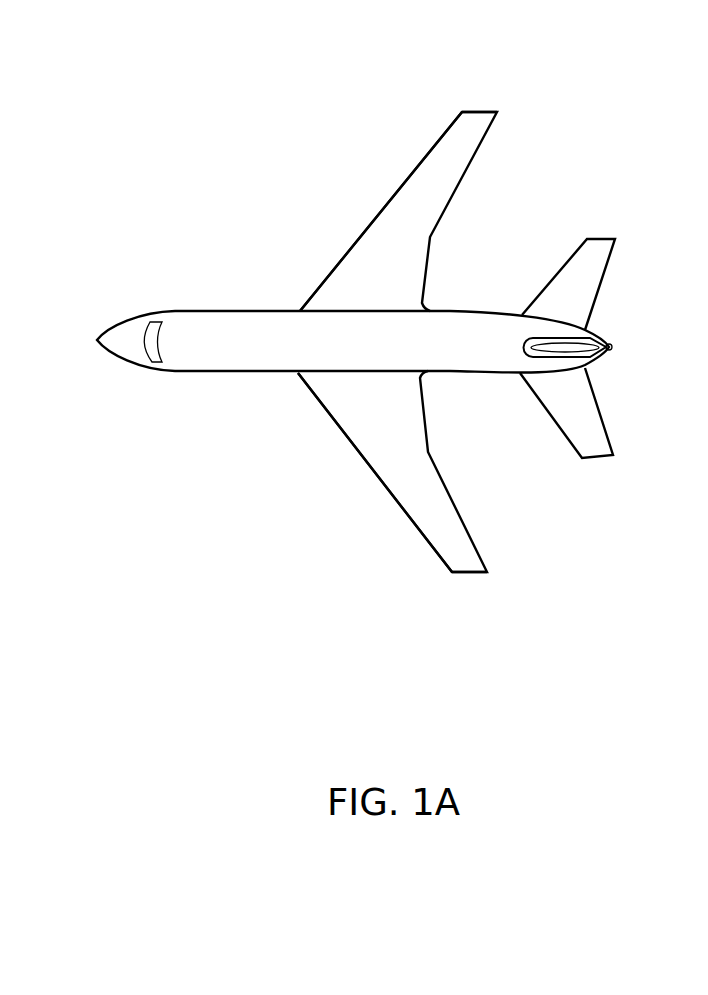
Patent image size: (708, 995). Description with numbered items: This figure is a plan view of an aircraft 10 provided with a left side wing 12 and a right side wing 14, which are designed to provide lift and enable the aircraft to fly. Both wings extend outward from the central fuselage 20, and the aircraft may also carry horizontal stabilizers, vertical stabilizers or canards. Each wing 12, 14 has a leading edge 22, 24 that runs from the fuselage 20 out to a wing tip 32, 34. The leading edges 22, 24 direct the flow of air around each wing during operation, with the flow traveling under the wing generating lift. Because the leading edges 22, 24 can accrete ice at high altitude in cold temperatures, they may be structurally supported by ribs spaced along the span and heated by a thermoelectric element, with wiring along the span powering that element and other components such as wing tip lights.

The aircraft 10 is at (160, 160).
The left side wing 12 is at (410, 500).
The right side wing 14 is at (360, 297).
The fuselage 20 is at (252, 360).
The leading edge 22 is at (358, 455).
The leading edge 24 is at (365, 224).
The wing tip 32 is at (468, 575).
The wing tip 34 is at (473, 110).